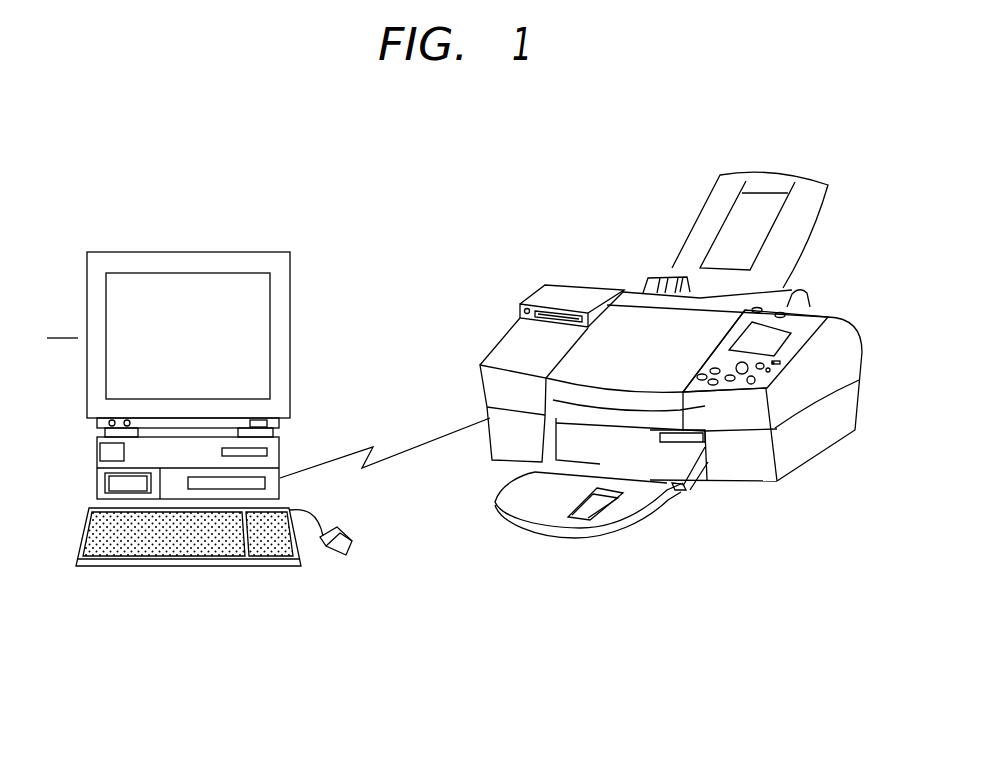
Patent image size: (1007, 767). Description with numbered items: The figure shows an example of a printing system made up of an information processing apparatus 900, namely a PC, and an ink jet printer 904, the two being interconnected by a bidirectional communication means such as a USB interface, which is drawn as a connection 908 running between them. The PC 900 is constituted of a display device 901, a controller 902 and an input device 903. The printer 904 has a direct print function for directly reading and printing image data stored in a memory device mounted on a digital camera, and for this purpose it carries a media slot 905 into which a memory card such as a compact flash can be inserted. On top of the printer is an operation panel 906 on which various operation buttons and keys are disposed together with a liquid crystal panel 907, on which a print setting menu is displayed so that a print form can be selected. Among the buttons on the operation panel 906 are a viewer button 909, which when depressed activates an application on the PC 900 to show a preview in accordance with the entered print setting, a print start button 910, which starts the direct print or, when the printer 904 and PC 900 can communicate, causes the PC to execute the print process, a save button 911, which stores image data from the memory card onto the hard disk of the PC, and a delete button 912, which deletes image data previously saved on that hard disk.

The information processing apparatus 900 is at (205, 238).
The display device 901 is at (290, 323).
The controller 902 is at (282, 453).
The input device 903 is at (211, 566).
The ink jet printer 904 is at (808, 293).
The media slot 905 is at (542, 310).
The operation panel 906 is at (769, 372).
The liquid crystal panel 907 is at (753, 340).
The communication cable 908 is at (425, 443).
The viewer button 909 is at (749, 386).
The print start button 910 is at (713, 386).
The save button 911 is at (776, 366).
The delete button 912 is at (786, 358).